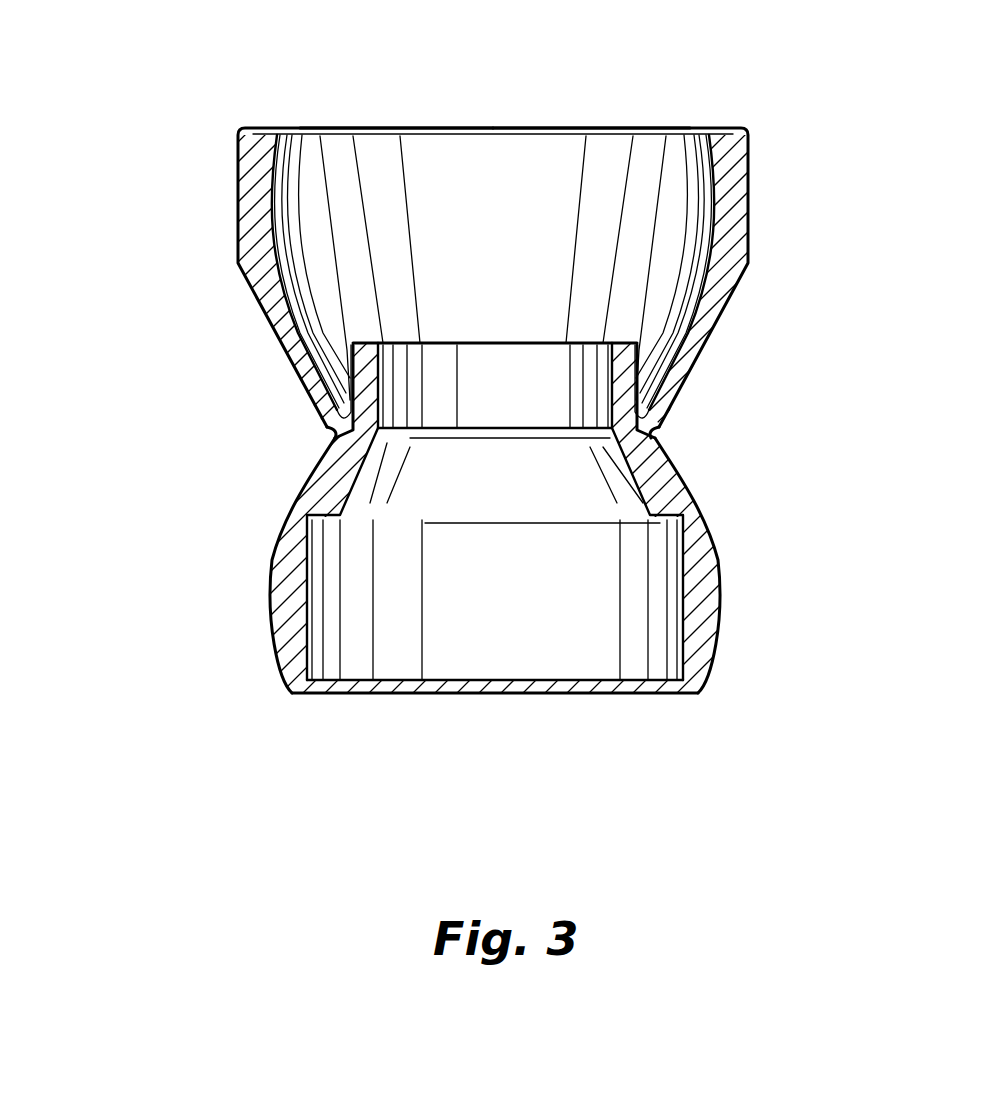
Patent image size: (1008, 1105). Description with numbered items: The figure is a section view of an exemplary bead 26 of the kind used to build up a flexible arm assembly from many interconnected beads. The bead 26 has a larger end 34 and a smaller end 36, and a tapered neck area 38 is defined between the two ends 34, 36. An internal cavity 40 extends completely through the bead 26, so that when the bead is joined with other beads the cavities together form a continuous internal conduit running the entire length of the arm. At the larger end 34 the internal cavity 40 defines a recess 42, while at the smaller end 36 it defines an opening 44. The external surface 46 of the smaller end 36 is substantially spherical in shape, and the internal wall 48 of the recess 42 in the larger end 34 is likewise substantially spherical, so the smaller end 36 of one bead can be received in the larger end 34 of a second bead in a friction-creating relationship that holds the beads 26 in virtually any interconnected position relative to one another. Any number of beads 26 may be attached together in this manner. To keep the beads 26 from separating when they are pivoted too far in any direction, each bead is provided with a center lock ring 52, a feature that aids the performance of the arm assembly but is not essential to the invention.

The bead 26 is at (185, 507).
The larger end 34 is at (215, 207).
The smaller end 36 is at (290, 605).
The tapered neck area 38 is at (302, 443).
The internal cavity 40 is at (417, 262).
The recess 42 is at (388, 128).
The opening 44 is at (495, 693).
The external surface 46 is at (723, 570).
The internal wall 48 is at (713, 233).
The center lock ring 52 is at (623, 367).